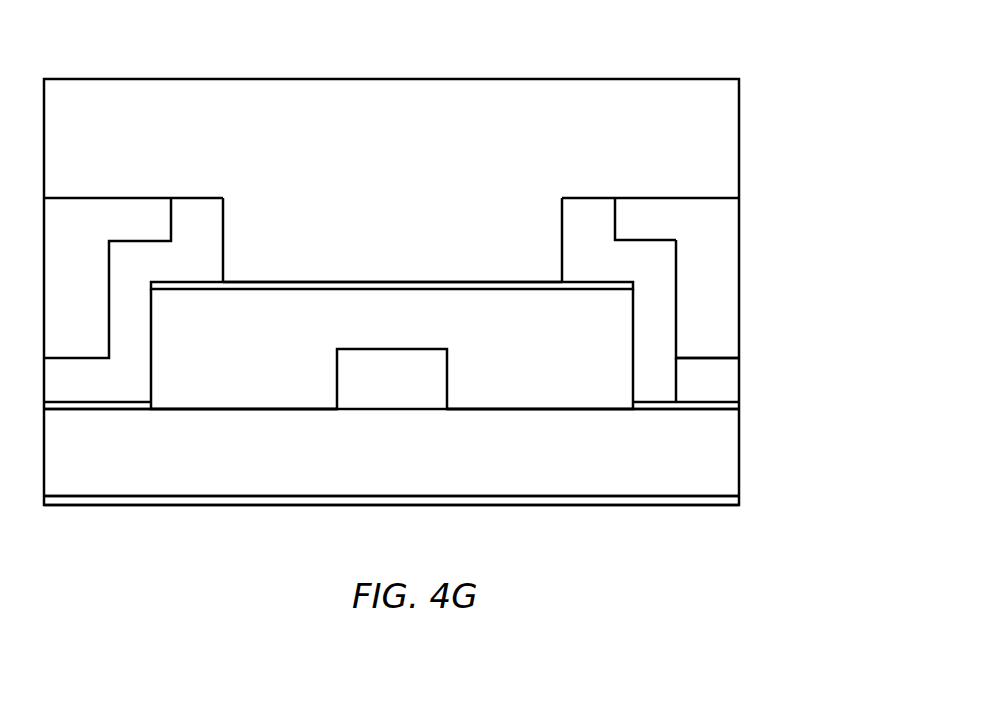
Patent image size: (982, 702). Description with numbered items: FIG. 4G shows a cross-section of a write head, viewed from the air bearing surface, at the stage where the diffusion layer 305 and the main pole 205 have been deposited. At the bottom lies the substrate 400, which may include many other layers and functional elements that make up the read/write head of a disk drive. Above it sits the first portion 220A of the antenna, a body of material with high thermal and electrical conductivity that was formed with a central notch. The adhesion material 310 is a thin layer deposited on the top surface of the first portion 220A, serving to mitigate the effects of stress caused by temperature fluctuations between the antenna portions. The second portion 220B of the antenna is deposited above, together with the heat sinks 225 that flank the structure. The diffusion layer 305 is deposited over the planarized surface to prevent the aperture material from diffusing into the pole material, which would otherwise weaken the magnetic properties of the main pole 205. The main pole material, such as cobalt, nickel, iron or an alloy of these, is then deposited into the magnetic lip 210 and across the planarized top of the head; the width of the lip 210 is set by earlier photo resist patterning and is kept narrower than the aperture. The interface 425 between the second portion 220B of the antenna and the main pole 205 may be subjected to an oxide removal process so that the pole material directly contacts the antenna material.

The main pole 205 is at (739, 157).
The heat sinks 225 is at (739, 270).
The interface 425 is at (554, 219).
The magnetic lip 210 is at (377, 235).
The diffusion layer 305 is at (305, 282).
The second portion of the antenna 220B is at (739, 368).
The adhesion material 310 is at (739, 403).
The first portion of the antenna 220A is at (739, 433).
The substrate 400 is at (739, 500).